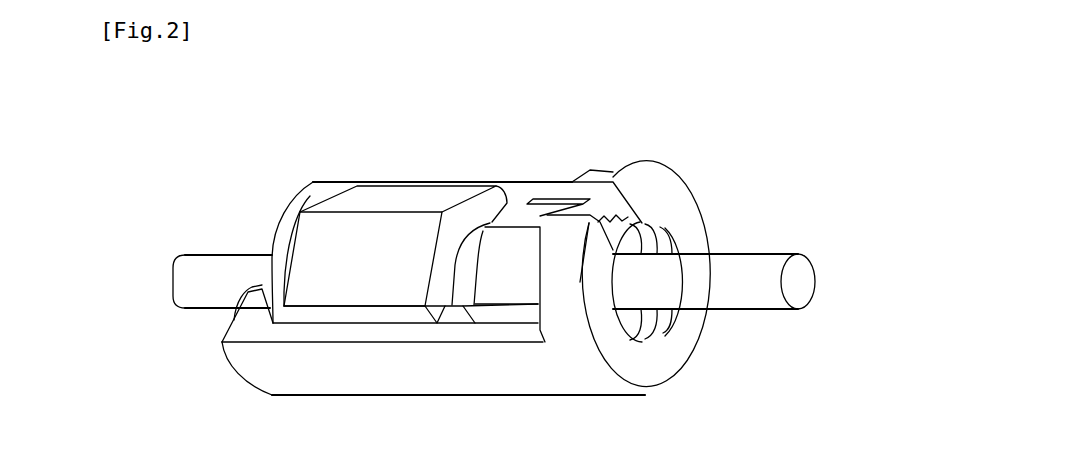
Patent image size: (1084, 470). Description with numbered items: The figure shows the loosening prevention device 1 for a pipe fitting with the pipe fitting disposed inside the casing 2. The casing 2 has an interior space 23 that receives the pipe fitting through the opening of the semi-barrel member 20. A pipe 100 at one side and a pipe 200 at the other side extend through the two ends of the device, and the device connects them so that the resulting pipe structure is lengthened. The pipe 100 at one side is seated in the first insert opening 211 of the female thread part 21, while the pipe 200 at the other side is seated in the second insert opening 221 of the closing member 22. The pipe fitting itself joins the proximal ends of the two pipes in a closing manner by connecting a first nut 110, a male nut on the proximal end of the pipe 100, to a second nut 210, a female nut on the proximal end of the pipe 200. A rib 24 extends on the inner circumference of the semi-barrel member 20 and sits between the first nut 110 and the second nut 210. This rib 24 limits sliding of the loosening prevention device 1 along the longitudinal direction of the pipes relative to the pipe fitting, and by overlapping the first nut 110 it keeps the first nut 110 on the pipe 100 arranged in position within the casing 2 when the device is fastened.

The loosening prevention device 1 is at (316, 131).
The casing 2 is at (553, 192).
The semi-barrel member 20 is at (382, 333).
The female thread part 21 is at (617, 365).
The closing member 22 is at (256, 312).
The interior space 23 is at (470, 318).
The rib 24 is at (447, 312).
The pipe 100 is at (780, 256).
The first nut 110 is at (517, 288).
The pipe 200 is at (198, 274).
The second nut 210 is at (338, 285).
The first insert opening 211 is at (600, 192).
The second insert opening 221 is at (240, 293).